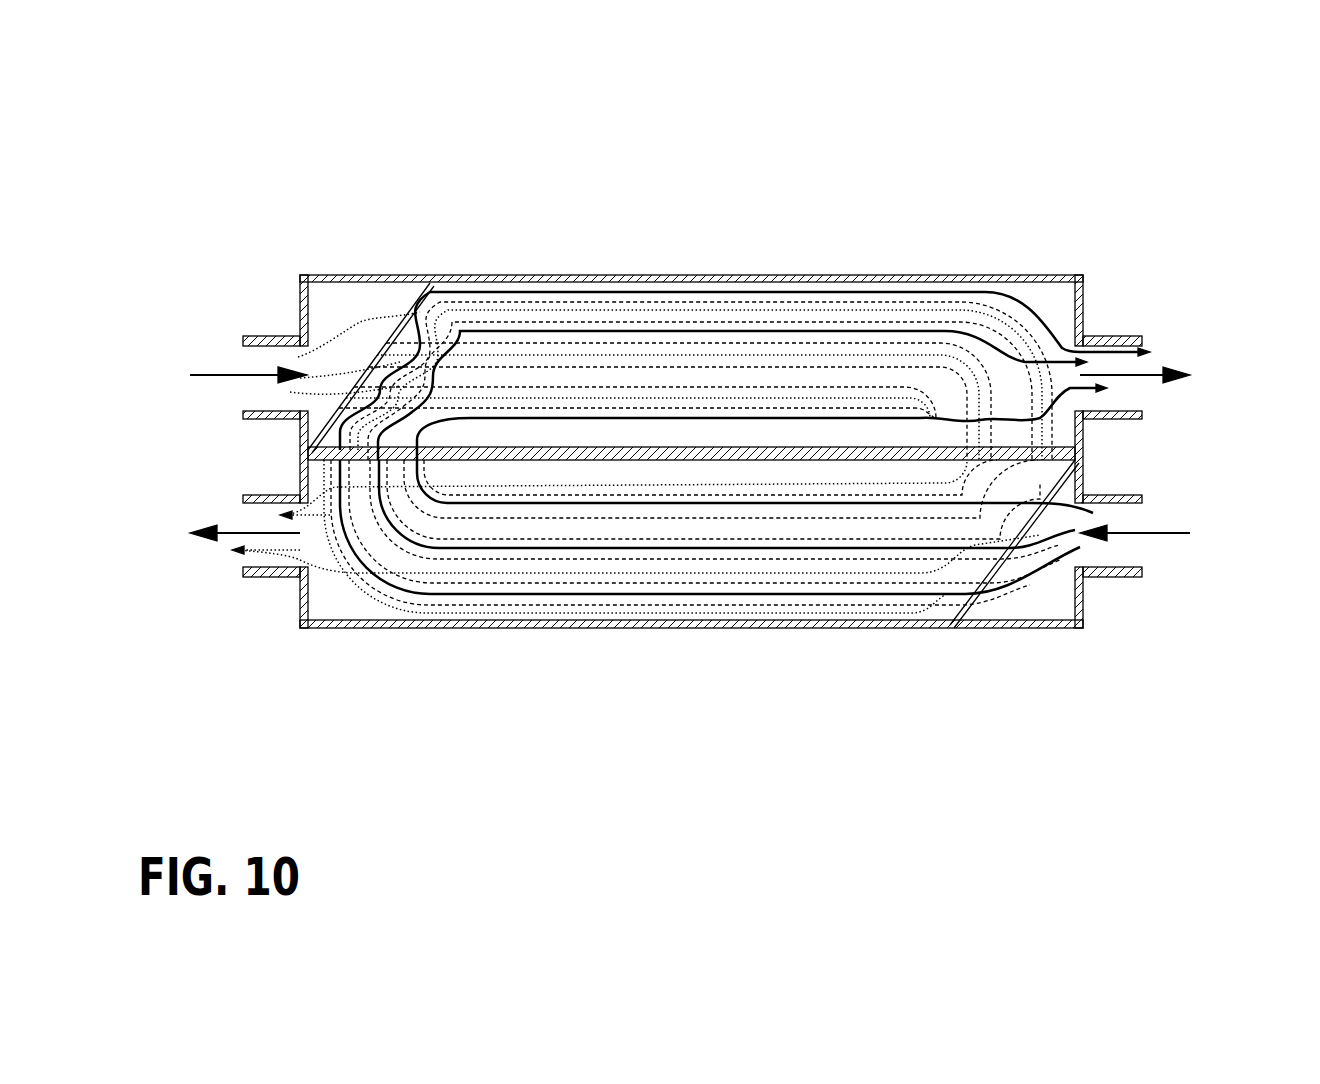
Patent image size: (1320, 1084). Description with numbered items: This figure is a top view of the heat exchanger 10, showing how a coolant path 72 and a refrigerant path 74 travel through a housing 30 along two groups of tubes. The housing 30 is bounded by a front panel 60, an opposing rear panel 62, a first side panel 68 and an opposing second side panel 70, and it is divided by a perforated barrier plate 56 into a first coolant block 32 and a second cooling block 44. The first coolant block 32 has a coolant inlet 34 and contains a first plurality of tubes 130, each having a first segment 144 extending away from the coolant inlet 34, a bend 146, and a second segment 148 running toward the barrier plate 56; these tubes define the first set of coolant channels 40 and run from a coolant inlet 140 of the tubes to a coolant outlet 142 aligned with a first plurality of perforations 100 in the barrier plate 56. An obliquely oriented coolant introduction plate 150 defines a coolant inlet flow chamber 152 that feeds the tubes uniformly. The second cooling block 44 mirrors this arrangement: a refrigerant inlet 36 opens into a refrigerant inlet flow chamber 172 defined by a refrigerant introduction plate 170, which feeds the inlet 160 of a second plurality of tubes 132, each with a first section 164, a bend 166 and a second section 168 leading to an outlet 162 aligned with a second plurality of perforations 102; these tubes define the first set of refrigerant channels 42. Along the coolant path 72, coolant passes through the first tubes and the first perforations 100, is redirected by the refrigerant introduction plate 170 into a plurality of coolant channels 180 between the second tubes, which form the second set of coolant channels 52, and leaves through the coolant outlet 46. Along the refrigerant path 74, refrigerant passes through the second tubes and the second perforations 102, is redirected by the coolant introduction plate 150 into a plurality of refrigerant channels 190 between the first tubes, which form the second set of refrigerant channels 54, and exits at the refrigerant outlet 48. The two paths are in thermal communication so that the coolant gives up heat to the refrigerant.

The heat exchanger 10 is at (458, 176).
The housing 30 is at (502, 275).
The first coolant block 32 is at (605, 290).
The coolant inlet 34 is at (220, 375).
The refrigerant inlet 36 is at (1145, 535).
The first set of coolant channels 40 is at (750, 300).
The first set of refrigerant channels 42 is at (922, 600).
The second cooling block 44 is at (852, 618).
The coolant outlet 46 is at (235, 535).
The refrigerant outlet 48 is at (1150, 375).
The second set of coolant channels 52 is at (453, 577).
The second set of refrigerant channels 54 is at (980, 340).
The barrier plate 56 is at (925, 360).
The front panel 60 is at (300, 612).
The rear panel 62 is at (1085, 484).
The first side panel 68 is at (828, 275).
The second side panel 70 is at (606, 625).
The coolant path 72 is at (365, 372).
The refrigerant path 74 is at (1020, 577).
The first plurality of perforations 100 is at (1040, 435).
The second plurality of perforations 102 is at (300, 435).
The first plurality of tubes 130 is at (680, 312).
The second plurality of tubes 132 is at (510, 598).
The coolant inlet of the first plurality of tubes 140 is at (397, 312).
The coolant outlet of the first plurality of tubes 142 is at (1080, 472).
The first segment 144 is at (535, 298).
The bend 146 is at (1020, 320).
The second segment 148 is at (1090, 365).
The coolant introduction plate 150 is at (340, 362).
The coolant inlet flow chamber 152 is at (300, 325).
The inlet of the second plurality of tubes 160 is at (975, 592).
The outlet of the second plurality of tubes 162 is at (330, 482).
The first section 164 is at (742, 598).
The bend 166 is at (353, 572).
The second section 168 is at (332, 508).
The refrigerant introduction plate 170 is at (1025, 578).
The refrigerant inlet flow chamber 172 is at (1053, 580).
The plurality of coolant channels 180 is at (807, 565).
The plurality of refrigerant channels 190 is at (845, 355).